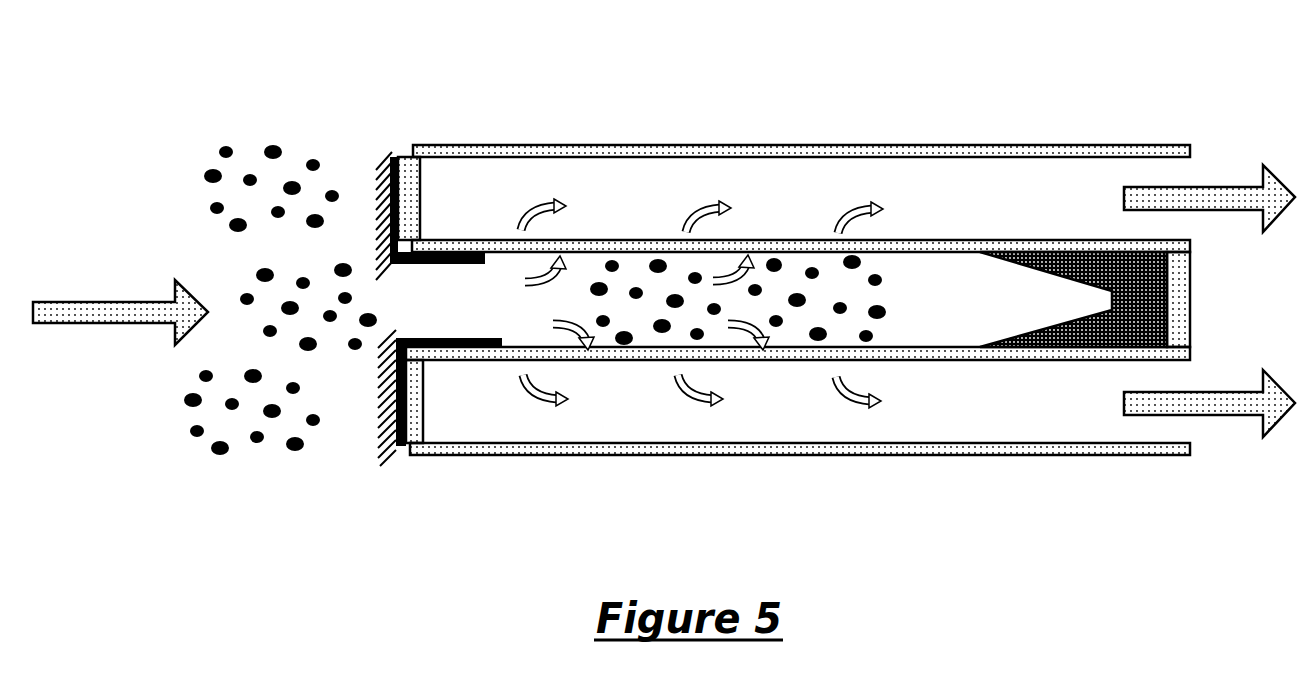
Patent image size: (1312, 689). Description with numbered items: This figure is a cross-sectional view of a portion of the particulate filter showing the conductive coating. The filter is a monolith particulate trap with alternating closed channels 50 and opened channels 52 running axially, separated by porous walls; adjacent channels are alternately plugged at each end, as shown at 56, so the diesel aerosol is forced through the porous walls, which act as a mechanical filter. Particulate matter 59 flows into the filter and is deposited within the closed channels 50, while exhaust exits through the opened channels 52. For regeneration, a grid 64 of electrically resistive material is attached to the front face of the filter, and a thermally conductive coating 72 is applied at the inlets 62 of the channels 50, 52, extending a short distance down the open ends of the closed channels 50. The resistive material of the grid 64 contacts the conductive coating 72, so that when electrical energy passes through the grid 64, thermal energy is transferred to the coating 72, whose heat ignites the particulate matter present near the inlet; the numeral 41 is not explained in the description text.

The tube walls 41 is at (650, 246).
The closed cells/channels 50 is at (998, 283).
The opened cells/channels 52 is at (963, 190).
The plug 56 is at (410, 155).
The particulate matter 59 is at (1153, 290).
The inlets 62 is at (362, 289).
The grid 64 is at (392, 425).
The thermally conductive coating 72 is at (390, 155).